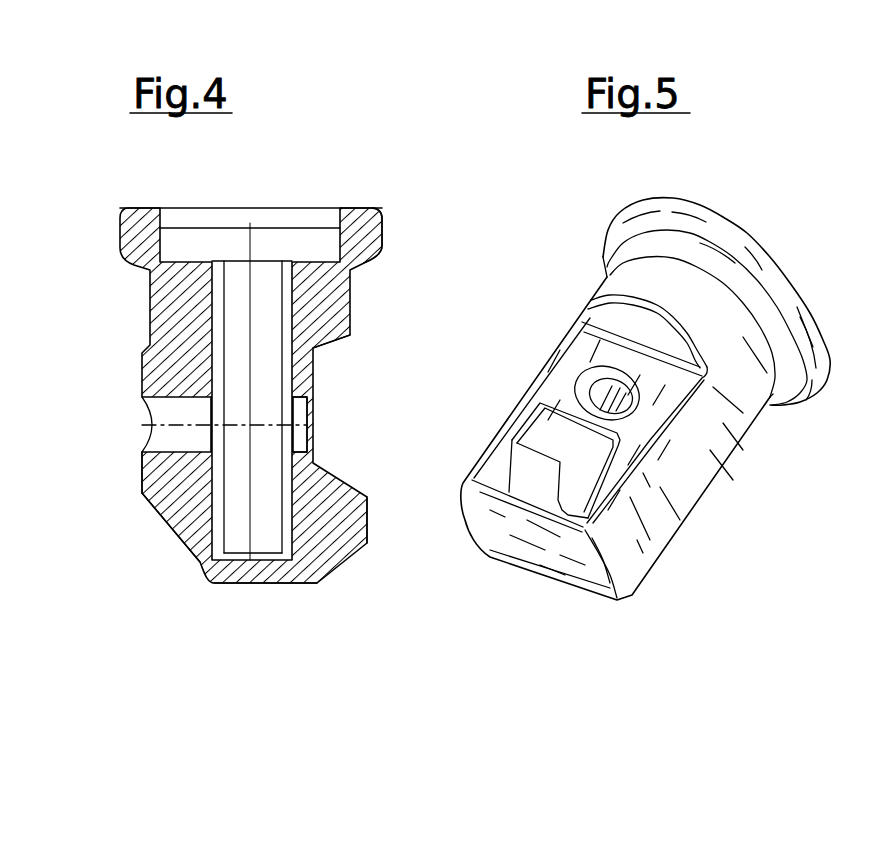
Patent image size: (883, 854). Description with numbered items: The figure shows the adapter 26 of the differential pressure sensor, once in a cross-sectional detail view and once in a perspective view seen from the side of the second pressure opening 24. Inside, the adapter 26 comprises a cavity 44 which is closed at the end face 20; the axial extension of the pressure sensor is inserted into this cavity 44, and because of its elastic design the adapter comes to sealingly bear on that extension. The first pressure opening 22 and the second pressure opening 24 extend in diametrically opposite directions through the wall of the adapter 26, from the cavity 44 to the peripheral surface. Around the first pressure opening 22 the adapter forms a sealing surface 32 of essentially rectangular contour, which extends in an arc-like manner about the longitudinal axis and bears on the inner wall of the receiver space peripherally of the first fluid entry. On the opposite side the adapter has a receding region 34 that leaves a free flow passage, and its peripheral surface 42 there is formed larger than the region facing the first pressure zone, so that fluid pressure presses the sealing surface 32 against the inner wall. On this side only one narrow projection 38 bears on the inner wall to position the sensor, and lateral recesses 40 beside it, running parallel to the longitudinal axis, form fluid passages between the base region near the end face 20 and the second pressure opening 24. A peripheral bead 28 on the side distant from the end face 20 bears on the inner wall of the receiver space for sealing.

In FIG. 4, the end face 20 is at (272, 585).
In FIG. 5, the end face 20 is at (553, 561).
In FIG. 4, the first pressure opening 22 is at (167, 442).
In FIG. 4, the second pressure opening 24 is at (313, 412).
In FIG. 5, the second pressure opening 24 is at (600, 388).
In FIG. 4, the adapter 26 is at (365, 204).
In FIG. 5, the adapter 26 is at (800, 268).
In FIG. 4, the peripheral bead 28 is at (385, 232).
In FIG. 5, the peripheral bead 28 is at (710, 235).
In FIG. 4, the sealing surface 32 is at (137, 482).
In FIG. 4, the receding region 34 is at (173, 545).
In FIG. 5, the receding region 34 is at (882, 588).
In FIG. 4, the projection 38 is at (373, 540).
In FIG. 5, the projection 38 is at (497, 560).
In FIG. 5, the lateral recesses 40 is at (497, 464).
In FIG. 4, the peripheral surface 42 is at (315, 358).
In FIG. 5, the peripheral surface 42 is at (650, 418).
In FIG. 4, the cavity 44 is at (266, 278).